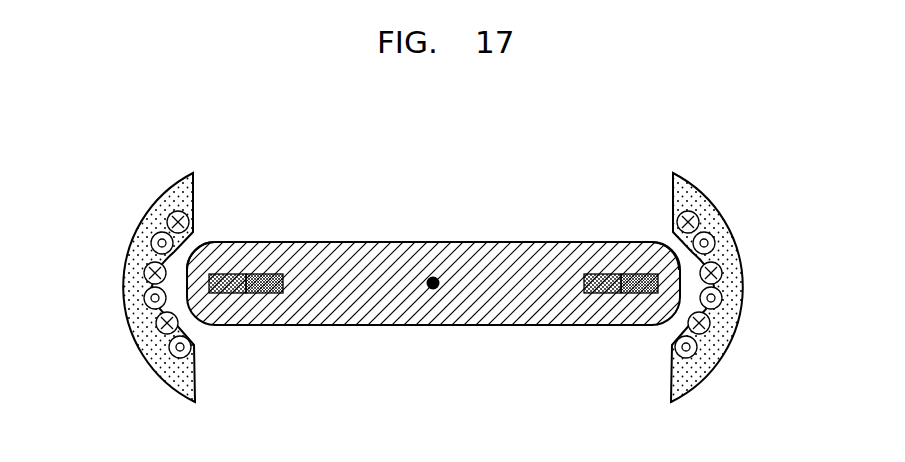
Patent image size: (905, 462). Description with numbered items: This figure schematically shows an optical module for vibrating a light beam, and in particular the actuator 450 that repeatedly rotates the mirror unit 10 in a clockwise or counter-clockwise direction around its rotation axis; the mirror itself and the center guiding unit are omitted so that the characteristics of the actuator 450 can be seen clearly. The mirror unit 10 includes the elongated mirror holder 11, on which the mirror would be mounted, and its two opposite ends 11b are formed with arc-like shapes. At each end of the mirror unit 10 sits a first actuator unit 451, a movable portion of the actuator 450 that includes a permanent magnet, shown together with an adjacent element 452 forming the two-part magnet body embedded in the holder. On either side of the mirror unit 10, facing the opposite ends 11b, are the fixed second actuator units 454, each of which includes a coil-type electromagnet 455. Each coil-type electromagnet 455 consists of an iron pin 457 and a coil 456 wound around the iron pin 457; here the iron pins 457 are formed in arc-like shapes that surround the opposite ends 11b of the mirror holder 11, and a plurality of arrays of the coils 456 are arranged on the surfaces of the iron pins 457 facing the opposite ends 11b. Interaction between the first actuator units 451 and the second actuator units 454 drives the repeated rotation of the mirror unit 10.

The mirror unit 10 is at (465, 238).
The mirror holder 11 is at (391, 313).
The opposite ends of the mirror holder 11b is at (188, 270).
The actuator 450 is at (432, 276).
The first actuator unit 451 is at (274, 297).
The second magnet portion 452 is at (233, 294).
The second actuator unit 454 is at (140, 370).
The coil-type electromagnet 455 is at (432, 284).
The coil 456 is at (145, 272).
The iron pin 457 is at (137, 323).